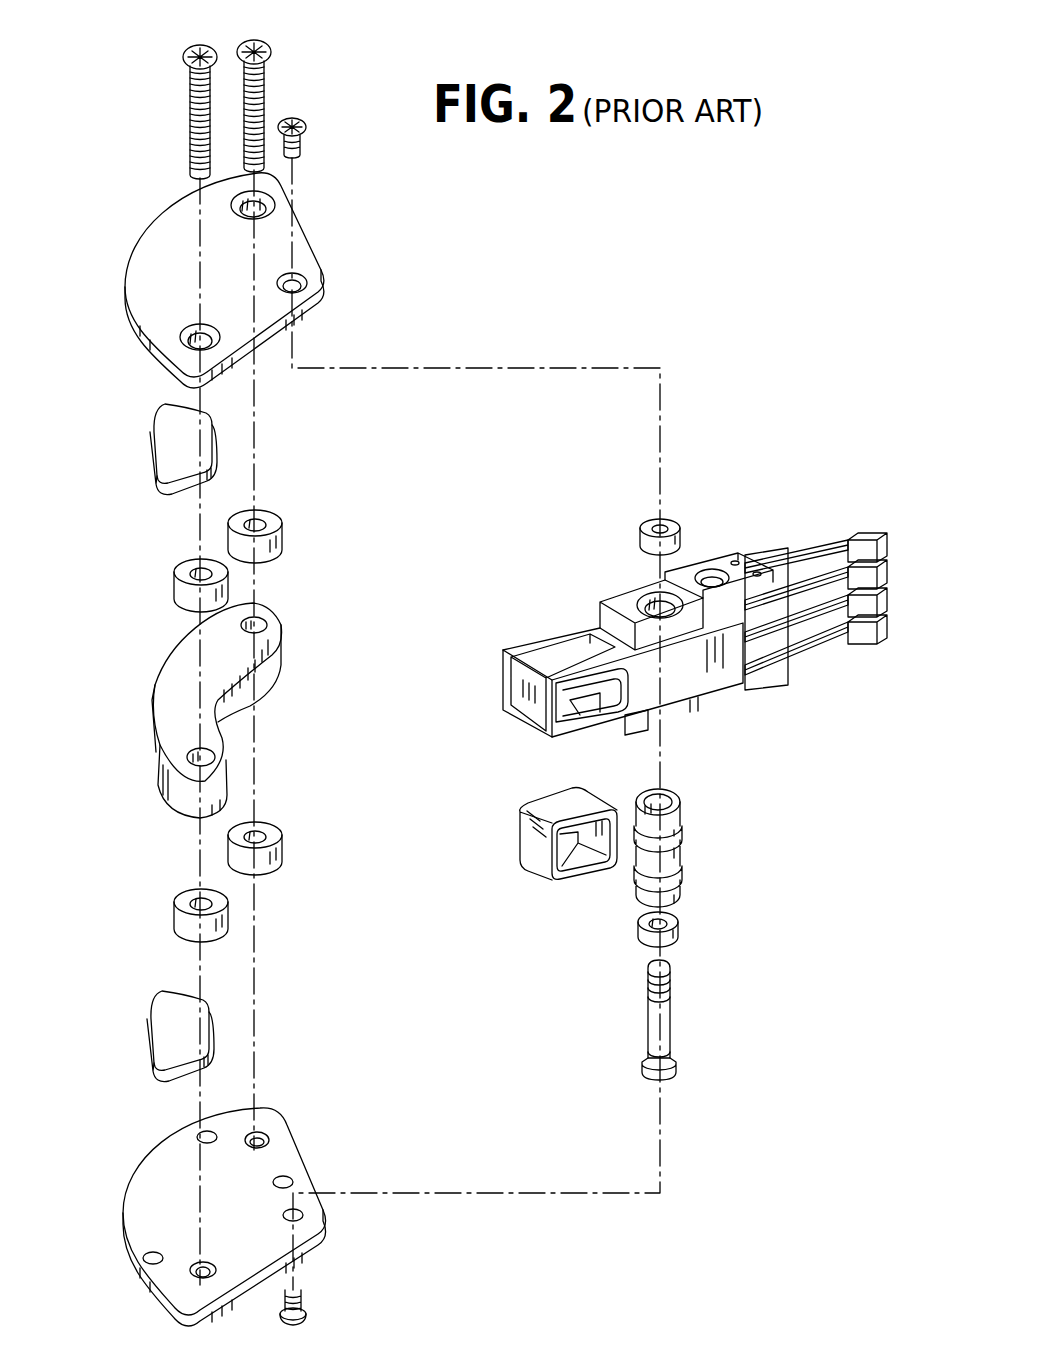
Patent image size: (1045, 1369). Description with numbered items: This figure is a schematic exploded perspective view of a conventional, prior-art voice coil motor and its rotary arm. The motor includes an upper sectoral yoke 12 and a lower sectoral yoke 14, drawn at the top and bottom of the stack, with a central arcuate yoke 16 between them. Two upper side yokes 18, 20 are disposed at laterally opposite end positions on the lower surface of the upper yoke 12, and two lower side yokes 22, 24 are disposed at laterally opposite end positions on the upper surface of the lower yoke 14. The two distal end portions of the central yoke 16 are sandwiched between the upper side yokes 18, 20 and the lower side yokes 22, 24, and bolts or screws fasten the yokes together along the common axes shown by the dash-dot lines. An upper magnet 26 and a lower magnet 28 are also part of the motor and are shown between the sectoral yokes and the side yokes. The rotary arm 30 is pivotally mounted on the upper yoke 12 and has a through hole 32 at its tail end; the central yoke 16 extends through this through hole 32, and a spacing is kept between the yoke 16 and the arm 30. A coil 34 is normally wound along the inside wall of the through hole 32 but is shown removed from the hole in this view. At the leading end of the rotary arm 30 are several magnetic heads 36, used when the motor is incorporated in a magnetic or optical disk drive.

The upper sectoral yoke 12 is at (130, 284).
The lower sectoral yoke 14 is at (135, 1190).
The central arcuate yoke 16 is at (163, 706).
The upper side yoke 18 is at (176, 598).
The upper side yoke 20 is at (283, 550).
The lower side yoke 22 is at (178, 918).
The lower side yoke 24 is at (285, 848).
The upper magnet 26 is at (152, 440).
The lower magnet 28 is at (158, 1014).
The rotary arm 30 is at (672, 693).
The through hole 32 is at (585, 708).
The coil 34 is at (520, 838).
The magnetic heads 36 is at (880, 545).